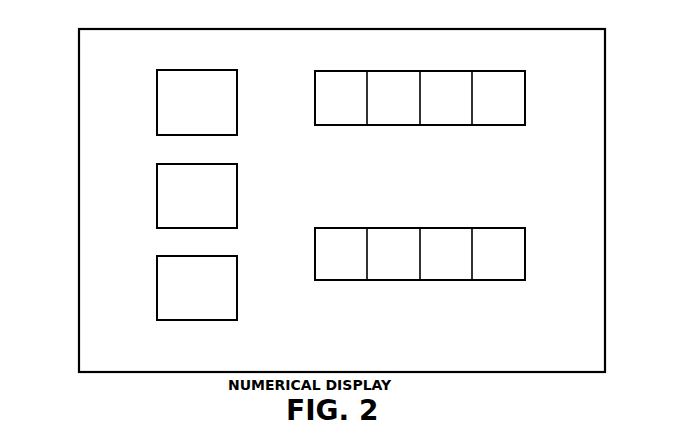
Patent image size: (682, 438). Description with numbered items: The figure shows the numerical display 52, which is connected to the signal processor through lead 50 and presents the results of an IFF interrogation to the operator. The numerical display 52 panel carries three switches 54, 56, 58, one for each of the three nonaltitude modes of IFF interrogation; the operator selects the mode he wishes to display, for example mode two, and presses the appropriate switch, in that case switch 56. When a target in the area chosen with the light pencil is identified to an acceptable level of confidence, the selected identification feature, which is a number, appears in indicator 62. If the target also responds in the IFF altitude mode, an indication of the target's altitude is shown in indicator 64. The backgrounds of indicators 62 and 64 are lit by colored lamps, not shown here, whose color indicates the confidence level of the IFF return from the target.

The lead 50 is at (71, 71).
The numerical display 52 is at (552, 30).
The switch 54 is at (157, 90).
The switch 56 is at (157, 185).
The switch 58 is at (157, 278).
The indicator 62 is at (353, 72).
The indicator 64 is at (344, 229).